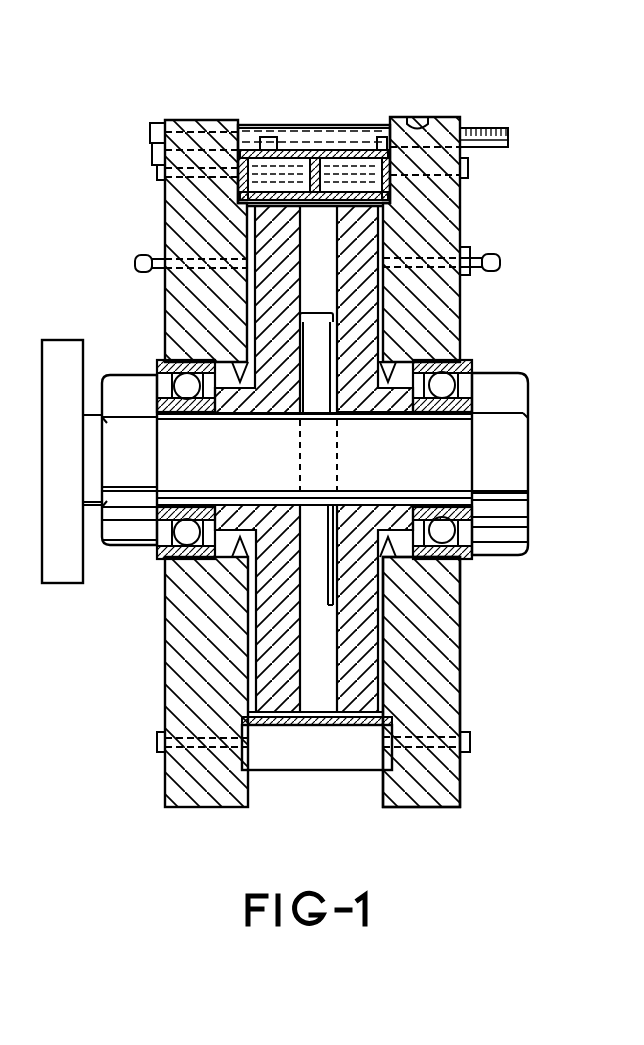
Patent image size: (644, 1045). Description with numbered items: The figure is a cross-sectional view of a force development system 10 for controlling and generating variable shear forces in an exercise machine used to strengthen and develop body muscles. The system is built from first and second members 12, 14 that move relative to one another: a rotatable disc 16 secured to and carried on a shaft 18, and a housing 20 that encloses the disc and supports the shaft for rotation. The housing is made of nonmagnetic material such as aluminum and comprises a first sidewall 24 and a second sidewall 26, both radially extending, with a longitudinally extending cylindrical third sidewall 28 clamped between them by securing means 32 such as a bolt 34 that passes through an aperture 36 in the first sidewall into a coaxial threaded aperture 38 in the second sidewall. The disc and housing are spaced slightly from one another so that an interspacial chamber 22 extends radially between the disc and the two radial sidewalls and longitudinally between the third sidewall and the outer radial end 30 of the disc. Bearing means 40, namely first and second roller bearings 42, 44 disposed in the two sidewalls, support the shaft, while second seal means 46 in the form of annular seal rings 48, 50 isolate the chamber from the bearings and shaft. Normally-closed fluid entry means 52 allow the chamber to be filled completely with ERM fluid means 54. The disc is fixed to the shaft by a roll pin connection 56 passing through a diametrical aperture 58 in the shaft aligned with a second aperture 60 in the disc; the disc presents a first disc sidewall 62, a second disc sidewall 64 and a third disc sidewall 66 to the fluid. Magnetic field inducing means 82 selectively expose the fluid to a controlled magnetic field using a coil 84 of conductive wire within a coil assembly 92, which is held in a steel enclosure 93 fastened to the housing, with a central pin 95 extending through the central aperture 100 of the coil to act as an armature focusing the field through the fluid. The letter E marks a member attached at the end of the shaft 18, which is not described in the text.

The force development system 10 is at (80, 662).
The first member 12 is at (358, 305).
The second member 14 is at (442, 637).
The rotatable disc 16 is at (240, 283).
The shaft 18 is at (460, 435).
The housing 20 is at (450, 663).
The interspacial chamber 22 is at (380, 625).
The first sidewall 24 is at (263, 237).
The second sidewall 26 is at (415, 288).
The third sidewall 28 is at (245, 203).
The outer radial end 30 is at (383, 217).
The securing means 32 is at (150, 124).
The bolt 34 is at (265, 125).
The aperture 36 is at (182, 133).
The threaded aperture 38 is at (421, 115).
The bearing means 40 is at (470, 362).
The first roller bearing 42 is at (163, 557).
The second roller bearing 44 is at (465, 553).
The second seal means 46 is at (240, 363).
The annular seal ring 48 is at (248, 557).
The annular seal ring 50 is at (382, 362).
The fluid entry means 52 is at (132, 257).
The ERM fluid means 54 is at (248, 692).
The roll pin connection 56 is at (308, 540).
The aperture 58 is at (333, 470).
The second aperture 60 is at (337, 257).
The first disc sidewall 62 is at (248, 650).
The second disc sidewall 64 is at (378, 673).
The third disc sidewall 66 is at (348, 718).
The magnetic field inducing means 82 is at (339, 140).
The coil 84 is at (270, 148).
The coil assembly 92 is at (360, 773).
The enclosure 93 is at (242, 178).
The central pin 95 is at (303, 148).
The central aperture 100 is at (343, 163).
The external member E is at (55, 340).